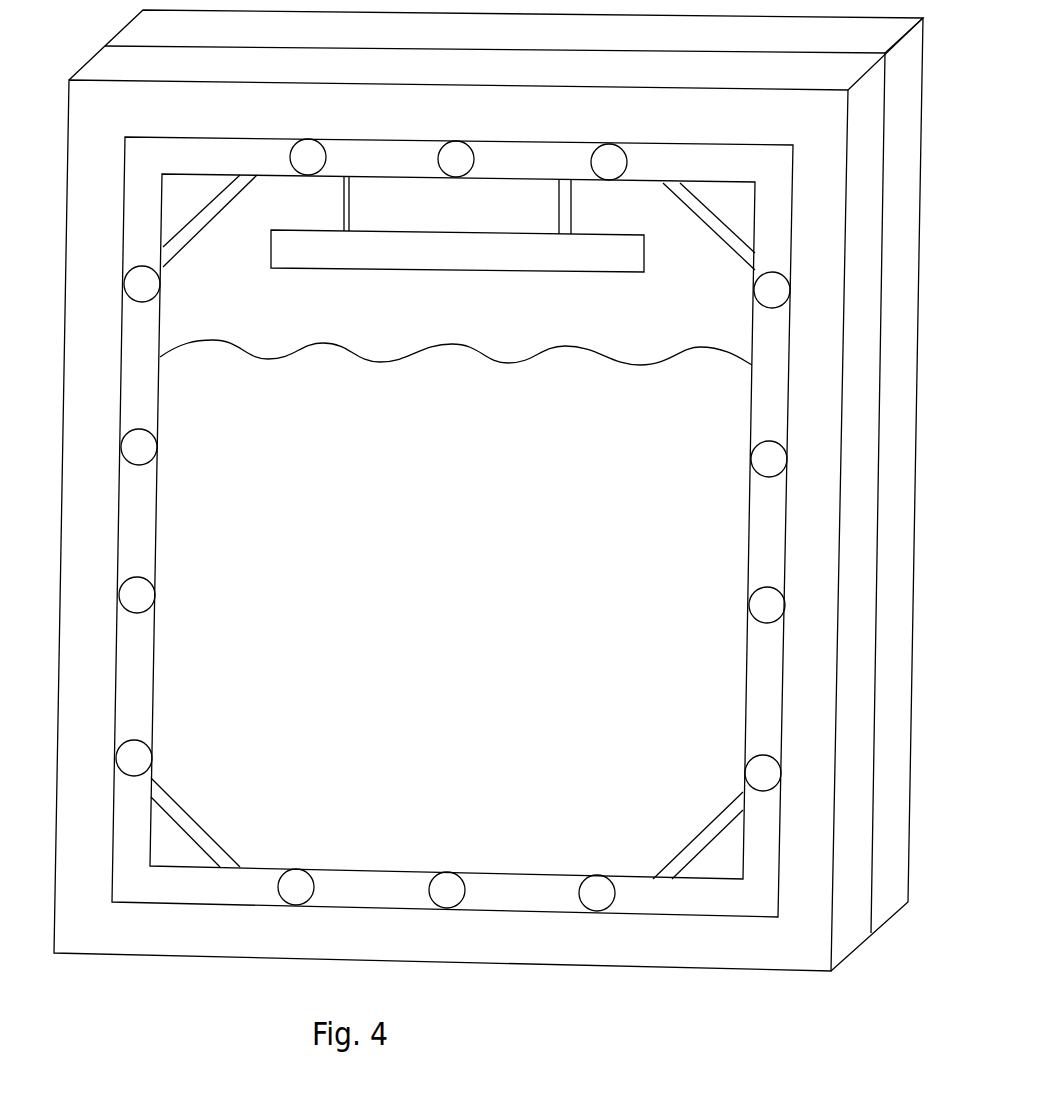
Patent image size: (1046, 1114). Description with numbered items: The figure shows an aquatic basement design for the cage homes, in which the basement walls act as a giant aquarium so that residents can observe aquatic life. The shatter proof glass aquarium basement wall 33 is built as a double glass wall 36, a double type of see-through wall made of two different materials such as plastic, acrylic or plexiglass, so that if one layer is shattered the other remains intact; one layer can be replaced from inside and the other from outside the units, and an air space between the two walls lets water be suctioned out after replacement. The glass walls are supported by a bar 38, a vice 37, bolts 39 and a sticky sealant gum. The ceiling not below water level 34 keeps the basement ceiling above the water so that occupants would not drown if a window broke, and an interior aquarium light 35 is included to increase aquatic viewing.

The shatter proof glass aquarium basement wall 33 is at (444, 576).
The ceiling not below water level 34 is at (652, 190).
The interior aquarium light 35 is at (455, 280).
The double glass wall 36 is at (830, 47).
The vice 37 is at (263, 182).
The bar 38 is at (210, 230).
The bolts 39 is at (308, 162).